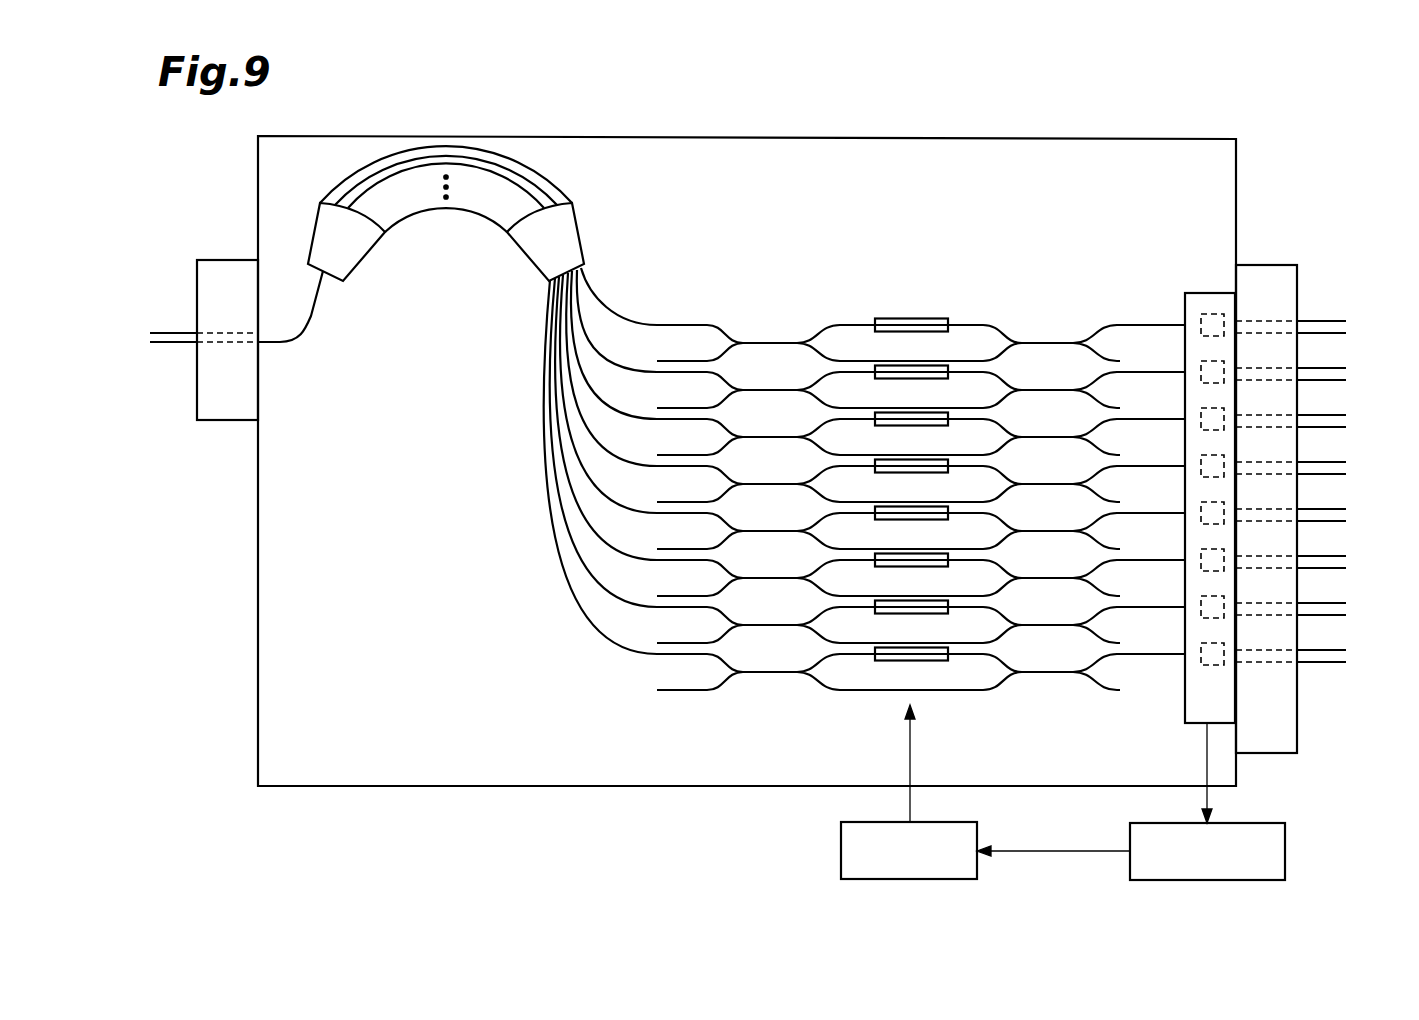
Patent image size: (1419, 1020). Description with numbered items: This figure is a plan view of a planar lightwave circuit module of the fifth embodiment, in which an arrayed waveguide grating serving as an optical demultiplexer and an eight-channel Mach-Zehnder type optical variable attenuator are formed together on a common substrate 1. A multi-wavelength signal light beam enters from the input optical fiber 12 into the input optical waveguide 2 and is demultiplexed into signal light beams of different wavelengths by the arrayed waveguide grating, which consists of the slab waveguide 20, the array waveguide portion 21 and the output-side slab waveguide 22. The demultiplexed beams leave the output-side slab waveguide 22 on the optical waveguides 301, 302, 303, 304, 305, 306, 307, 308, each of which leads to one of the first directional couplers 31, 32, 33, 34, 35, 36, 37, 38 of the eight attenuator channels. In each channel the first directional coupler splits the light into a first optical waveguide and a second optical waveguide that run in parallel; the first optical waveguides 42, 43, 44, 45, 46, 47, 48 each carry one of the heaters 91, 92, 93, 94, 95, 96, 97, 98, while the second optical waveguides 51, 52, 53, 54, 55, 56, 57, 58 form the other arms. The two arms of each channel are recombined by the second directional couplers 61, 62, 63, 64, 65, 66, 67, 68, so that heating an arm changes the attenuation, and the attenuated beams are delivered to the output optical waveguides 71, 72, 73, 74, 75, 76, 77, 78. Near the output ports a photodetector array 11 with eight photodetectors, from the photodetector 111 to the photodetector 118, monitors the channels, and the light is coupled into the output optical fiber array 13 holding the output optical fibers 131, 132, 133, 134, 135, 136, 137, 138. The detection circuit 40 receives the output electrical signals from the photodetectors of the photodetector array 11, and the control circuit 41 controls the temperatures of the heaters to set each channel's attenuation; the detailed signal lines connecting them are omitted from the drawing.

The substrate 1 is at (1118, 139).
The input optical waveguide 2 is at (303, 322).
The input optical fiber 12 is at (155, 331).
The slab waveguide 20 is at (349, 282).
The array waveguide portion 21 is at (445, 213).
The output-side slab waveguide 22 is at (535, 272).
The optical waveguide 301 is at (696, 324).
The optical waveguide 302 is at (696, 371).
The optical waveguide 303 is at (696, 418).
The optical waveguide 304 is at (696, 465).
The optical waveguide 305 is at (696, 512).
The optical waveguide 306 is at (696, 559).
The optical waveguide 307 is at (696, 606).
The optical waveguide 308 is at (696, 653).
The first directional coupler 31 is at (843, 343).
The first directional coupler 32 is at (770, 387).
The first directional coupler 33 is at (770, 434).
The first directional coupler 34 is at (770, 481).
The first directional coupler 35 is at (770, 528).
The first directional coupler 36 is at (770, 575).
The first directional coupler 37 is at (770, 622).
The first directional coupler 38 is at (770, 669).
The first optical waveguide 42 is at (834, 374).
The first optical waveguide 43 is at (834, 421).
The first optical waveguide 44 is at (834, 468).
The first optical waveguide 45 is at (834, 515).
The first optical waveguide 46 is at (834, 562).
The first optical waveguide 47 is at (834, 609).
The first optical waveguide 48 is at (834, 656).
The heater 91 is at (893, 332).
The heater 92 is at (893, 379).
The heater 93 is at (893, 426).
The heater 94 is at (893, 473).
The heater 95 is at (893, 520).
The heater 96 is at (893, 567).
The heater 97 is at (893, 614).
The heater 98 is at (893, 661).
The second optical waveguide 51 is at (946, 359).
The second optical waveguide 52 is at (946, 406).
The second optical waveguide 53 is at (946, 453).
The second optical waveguide 54 is at (946, 500).
The second optical waveguide 55 is at (946, 547).
The second optical waveguide 56 is at (946, 594).
The second optical waveguide 57 is at (946, 641).
The second optical waveguide 58 is at (946, 688).
The second directional coupler 61 is at (1048, 341).
The second directional coupler 62 is at (1048, 388).
The second directional coupler 63 is at (1048, 435).
The second directional coupler 64 is at (1048, 482).
The second directional coupler 65 is at (1048, 529).
The second directional coupler 66 is at (1048, 576).
The second directional coupler 67 is at (1048, 623).
The second directional coupler 68 is at (1048, 670).
The output optical waveguide 71 is at (1142, 327).
The output optical waveguide 72 is at (1142, 374).
The output optical waveguide 73 is at (1142, 421).
The output optical waveguide 74 is at (1142, 468).
The output optical waveguide 75 is at (1142, 515).
The output optical waveguide 76 is at (1142, 562).
The output optical waveguide 77 is at (1142, 609).
The output optical waveguide 78 is at (1142, 656).
The photodetector array 11 is at (1212, 293).
The photodetector 111 is at (1207, 314).
The photodetector 118 is at (1208, 668).
The output optical fiber array 13 is at (1266, 265).
The output optical fiber 131 is at (1333, 314).
The output optical fiber 132 is at (1333, 361).
The output optical fiber 133 is at (1333, 408).
The output optical fiber 134 is at (1333, 455).
The output optical fiber 135 is at (1333, 502).
The output optical fiber 136 is at (1333, 549).
The output optical fiber 137 is at (1333, 596).
The output optical fiber 138 is at (1333, 643).
The detection circuit 40 is at (1286, 866).
The control circuit 41 is at (841, 862).